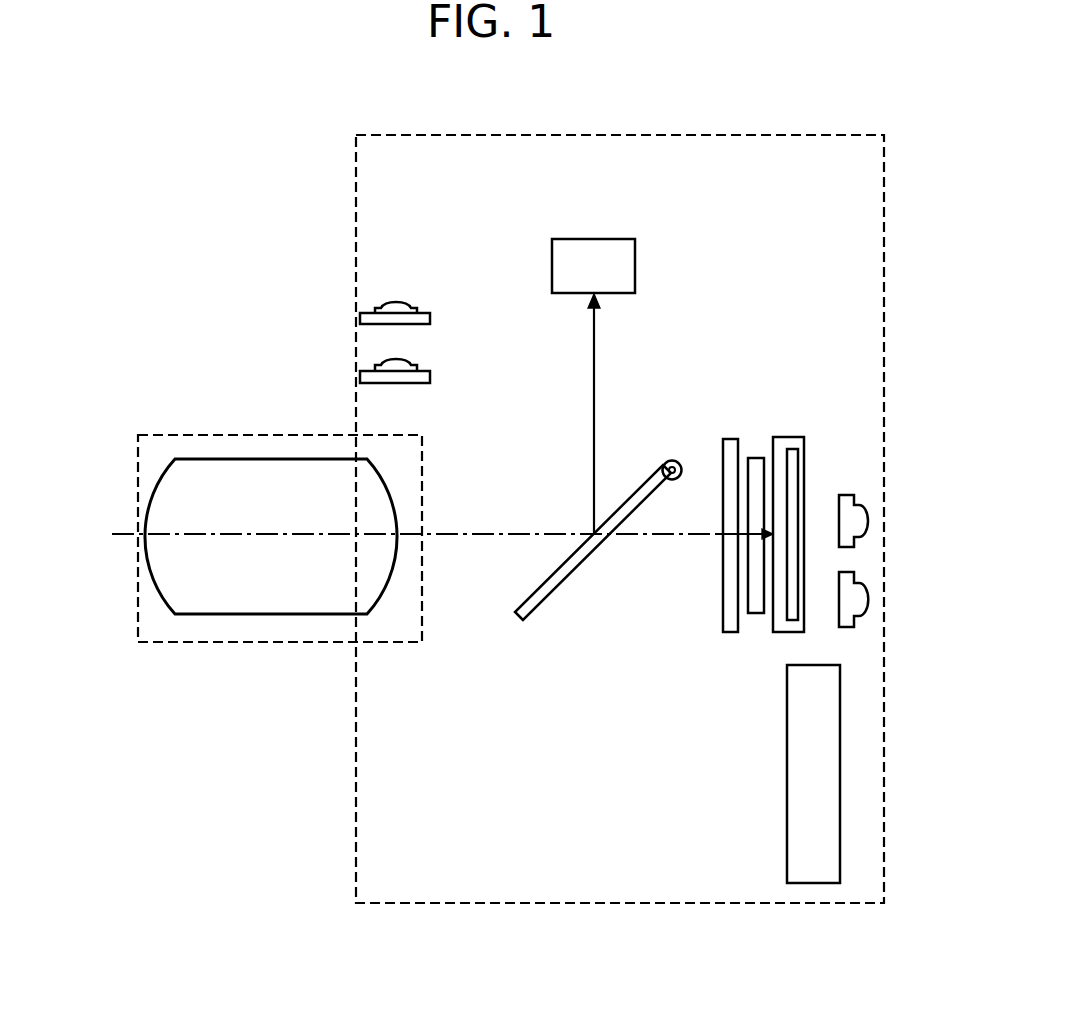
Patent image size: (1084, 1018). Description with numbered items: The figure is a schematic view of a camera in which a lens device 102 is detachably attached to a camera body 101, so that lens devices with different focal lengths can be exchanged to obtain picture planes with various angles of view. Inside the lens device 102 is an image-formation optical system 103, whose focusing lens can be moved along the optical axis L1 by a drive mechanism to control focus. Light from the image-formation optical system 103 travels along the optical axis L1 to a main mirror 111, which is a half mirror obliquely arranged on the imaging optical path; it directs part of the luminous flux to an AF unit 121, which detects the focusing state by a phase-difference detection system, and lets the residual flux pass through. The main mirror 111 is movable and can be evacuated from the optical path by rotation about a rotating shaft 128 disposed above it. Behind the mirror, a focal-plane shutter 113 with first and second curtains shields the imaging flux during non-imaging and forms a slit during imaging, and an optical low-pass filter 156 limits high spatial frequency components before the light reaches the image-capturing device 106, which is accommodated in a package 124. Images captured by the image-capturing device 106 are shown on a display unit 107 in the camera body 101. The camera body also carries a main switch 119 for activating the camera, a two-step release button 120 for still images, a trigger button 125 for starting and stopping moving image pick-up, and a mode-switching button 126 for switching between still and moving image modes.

The camera body 101 is at (580, 903).
The lens device 102 is at (193, 435).
The image-formation optical system 103 is at (220, 603).
The optical axis L1 is at (177, 533).
The trigger button 125 is at (380, 302).
The release button 120 is at (380, 359).
The AF unit 121 is at (605, 239).
The main mirror 111 is at (513, 615).
The rotating shaft 128 is at (675, 462).
The focal-plane shutter 113 is at (728, 633).
The optical low-pass filter 156 is at (755, 613).
The package 124 is at (775, 440).
The image-capturing device 106 is at (797, 453).
The mode-switching button 126 is at (868, 518).
The main switch 119 is at (868, 597).
The display unit 107 is at (787, 770).